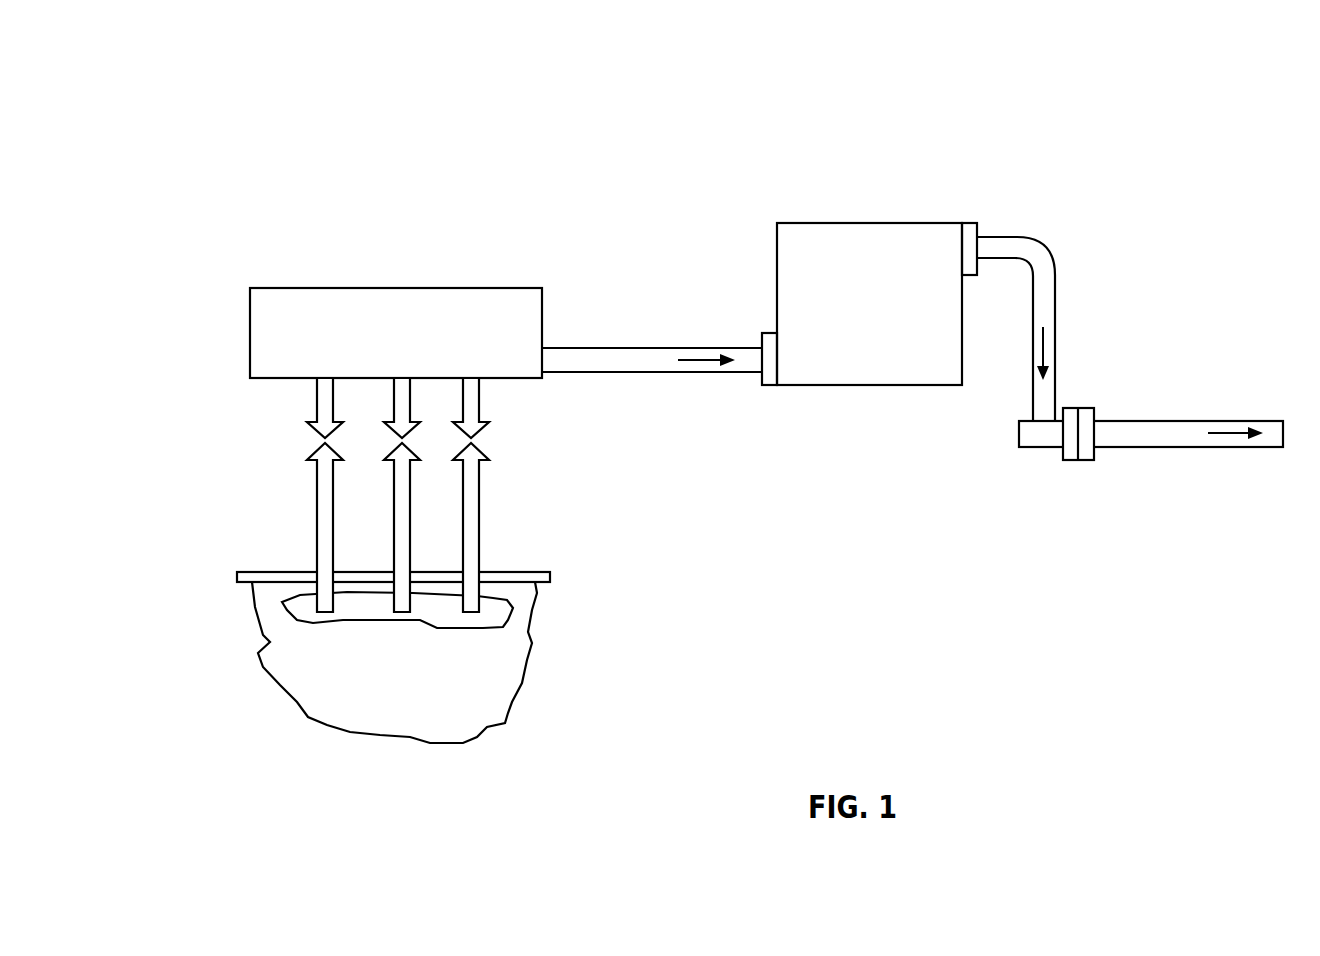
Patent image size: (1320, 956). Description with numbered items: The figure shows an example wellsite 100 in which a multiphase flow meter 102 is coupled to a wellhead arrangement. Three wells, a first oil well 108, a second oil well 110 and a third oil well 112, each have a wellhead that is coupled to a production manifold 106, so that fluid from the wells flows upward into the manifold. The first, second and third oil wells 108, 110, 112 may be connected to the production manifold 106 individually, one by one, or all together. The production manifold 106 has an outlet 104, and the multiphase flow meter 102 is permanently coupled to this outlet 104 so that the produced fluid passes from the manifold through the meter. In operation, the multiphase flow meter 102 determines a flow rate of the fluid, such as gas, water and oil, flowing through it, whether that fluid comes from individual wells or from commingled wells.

The wellsite 100 is at (213, 83).
The multiphase flow meter 102 is at (942, 222).
The outlet 104 is at (500, 288).
The production manifold 106 is at (458, 203).
The first oil well 108 is at (315, 512).
The second oil well 110 is at (412, 542).
The third oil well 112 is at (478, 525).